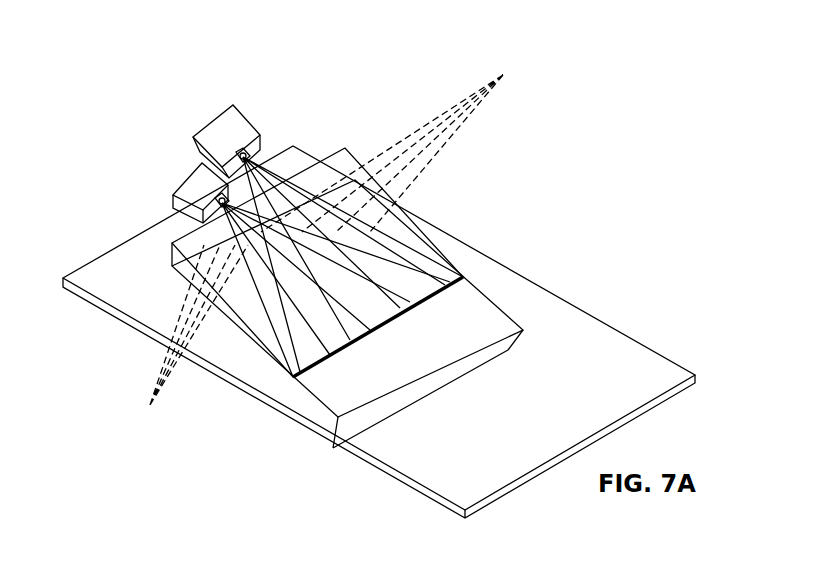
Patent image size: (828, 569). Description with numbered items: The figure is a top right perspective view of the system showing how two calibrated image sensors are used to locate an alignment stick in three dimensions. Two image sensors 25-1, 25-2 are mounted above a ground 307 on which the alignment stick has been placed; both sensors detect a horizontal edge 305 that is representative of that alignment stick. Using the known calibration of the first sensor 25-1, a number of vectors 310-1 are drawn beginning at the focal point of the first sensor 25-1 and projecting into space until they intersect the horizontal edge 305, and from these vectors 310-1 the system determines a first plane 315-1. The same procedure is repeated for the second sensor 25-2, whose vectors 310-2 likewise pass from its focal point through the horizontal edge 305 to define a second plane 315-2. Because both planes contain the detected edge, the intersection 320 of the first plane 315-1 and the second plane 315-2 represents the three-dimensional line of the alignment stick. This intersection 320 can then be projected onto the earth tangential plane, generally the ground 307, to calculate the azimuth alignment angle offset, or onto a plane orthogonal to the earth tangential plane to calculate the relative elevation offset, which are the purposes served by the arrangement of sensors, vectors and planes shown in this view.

The first image sensor 25-1 is at (220, 125).
The second image sensor 25-2 is at (192, 178).
The horizontal edge 305 is at (337, 325).
The ground 307 is at (577, 330).
The vectors 310-1 is at (505, 60).
The vectors 310-2 is at (150, 390).
The first plane 315-1 is at (345, 148).
The second plane 315-2 is at (171, 266).
The intersection of the two planes 320 is at (318, 361).